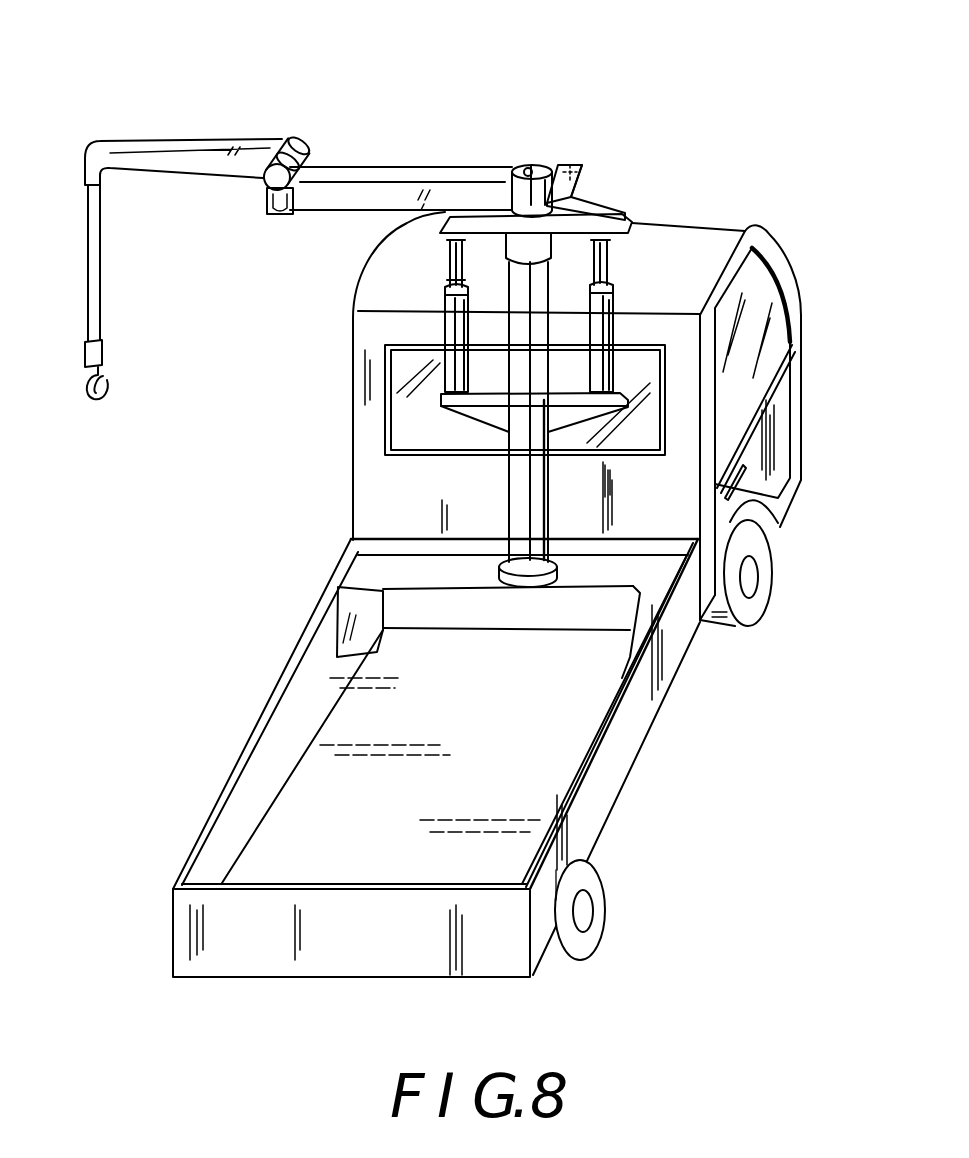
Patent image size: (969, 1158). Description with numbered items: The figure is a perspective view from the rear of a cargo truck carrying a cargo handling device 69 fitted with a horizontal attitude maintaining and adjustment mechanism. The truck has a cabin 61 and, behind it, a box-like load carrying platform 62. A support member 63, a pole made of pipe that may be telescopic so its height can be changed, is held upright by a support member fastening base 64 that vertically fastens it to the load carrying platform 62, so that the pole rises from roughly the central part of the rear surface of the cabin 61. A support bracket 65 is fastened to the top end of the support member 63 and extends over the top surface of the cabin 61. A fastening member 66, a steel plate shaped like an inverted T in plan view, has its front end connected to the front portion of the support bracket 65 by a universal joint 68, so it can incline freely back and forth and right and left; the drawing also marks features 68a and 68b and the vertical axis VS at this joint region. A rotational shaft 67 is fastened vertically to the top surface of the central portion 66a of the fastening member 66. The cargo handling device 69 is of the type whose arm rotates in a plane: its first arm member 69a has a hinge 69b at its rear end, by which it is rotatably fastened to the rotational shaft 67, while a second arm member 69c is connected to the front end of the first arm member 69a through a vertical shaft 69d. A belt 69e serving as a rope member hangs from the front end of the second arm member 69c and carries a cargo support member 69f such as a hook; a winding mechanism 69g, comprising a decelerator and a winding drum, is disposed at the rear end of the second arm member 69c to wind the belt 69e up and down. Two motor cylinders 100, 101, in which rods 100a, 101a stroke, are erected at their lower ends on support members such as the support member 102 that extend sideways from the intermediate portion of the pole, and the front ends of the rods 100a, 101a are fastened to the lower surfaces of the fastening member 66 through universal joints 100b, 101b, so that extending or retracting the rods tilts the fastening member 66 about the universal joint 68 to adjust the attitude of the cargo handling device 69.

The cabin 61 is at (710, 233).
The load carrying platform 62 is at (253, 750).
The support member 63 is at (517, 488).
The support member fastening base 64 is at (373, 570).
The support bracket 65 is at (575, 205).
The fastening member 66 is at (637, 212).
The central portion of the fastening member 66a is at (450, 297).
The rotational shaft 67 is at (507, 200).
The universal joint 68 is at (592, 156).
The bracket edge 68a is at (585, 180).
The bracket pin 68b is at (562, 162).
The cargo handling device 69 is at (332, 199).
The first arm member 69a is at (383, 174).
The hinge 69b is at (528, 166).
The second arm member 69c is at (207, 150).
The vertical shaft 69d is at (262, 207).
The belt 69e is at (100, 308).
The cargo support member 69f is at (110, 383).
The winding mechanism 69g is at (305, 125).
The vertical axis VS is at (531, 166).
The motor cylinder 100 is at (365, 308).
The rod 100a is at (450, 268).
The universal joint 100b is at (450, 218).
The motor cylinder 101 is at (744, 297).
The rod 101a is at (612, 275).
The universal joint 101b is at (612, 241).
The support member 102 is at (467, 412).